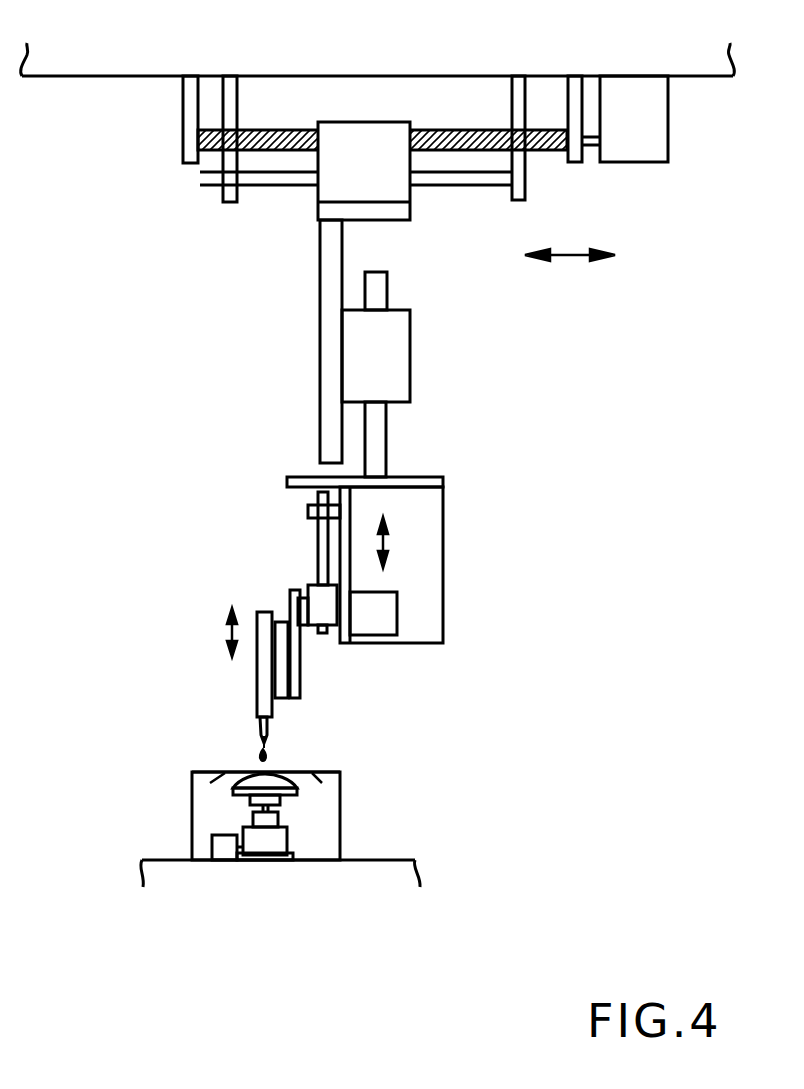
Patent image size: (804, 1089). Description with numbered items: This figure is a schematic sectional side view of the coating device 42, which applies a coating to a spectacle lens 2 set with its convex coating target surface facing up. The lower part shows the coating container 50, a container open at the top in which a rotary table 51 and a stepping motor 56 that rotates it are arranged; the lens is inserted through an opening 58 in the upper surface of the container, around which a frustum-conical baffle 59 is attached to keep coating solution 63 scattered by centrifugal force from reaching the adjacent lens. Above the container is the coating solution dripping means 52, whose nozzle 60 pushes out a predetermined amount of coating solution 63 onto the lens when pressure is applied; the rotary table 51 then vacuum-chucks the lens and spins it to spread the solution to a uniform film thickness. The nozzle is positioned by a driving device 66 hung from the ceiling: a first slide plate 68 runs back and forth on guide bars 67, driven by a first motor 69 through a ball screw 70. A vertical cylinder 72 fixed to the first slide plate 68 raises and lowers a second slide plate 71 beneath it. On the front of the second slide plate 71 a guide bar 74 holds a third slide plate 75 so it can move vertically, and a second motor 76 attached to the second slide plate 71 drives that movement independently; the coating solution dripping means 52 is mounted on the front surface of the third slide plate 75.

The spectacle lens 2 is at (250, 772).
The coating device 42 is at (90, 479).
The coating container 50 is at (192, 828).
The rotary table 51 is at (235, 795).
The coating solution dripping means 52 is at (222, 665).
The stepping motor 56 is at (223, 862).
The opening 58 is at (300, 768).
The baffle 59 is at (297, 770).
The nozzle 60 is at (255, 723).
The coating solution 63 is at (270, 753).
The driving device 66 is at (596, 410).
The guide bar 67 is at (465, 182).
The first slide plate 68 is at (318, 196).
The first motor 69 is at (647, 132).
The ball screw 70 is at (448, 130).
The second slide plate 71 is at (417, 513).
The vertical cylinder 72 is at (402, 353).
The guide bar 74 is at (318, 547).
The third slide plate 75 is at (308, 600).
The second motor 76 is at (390, 612).